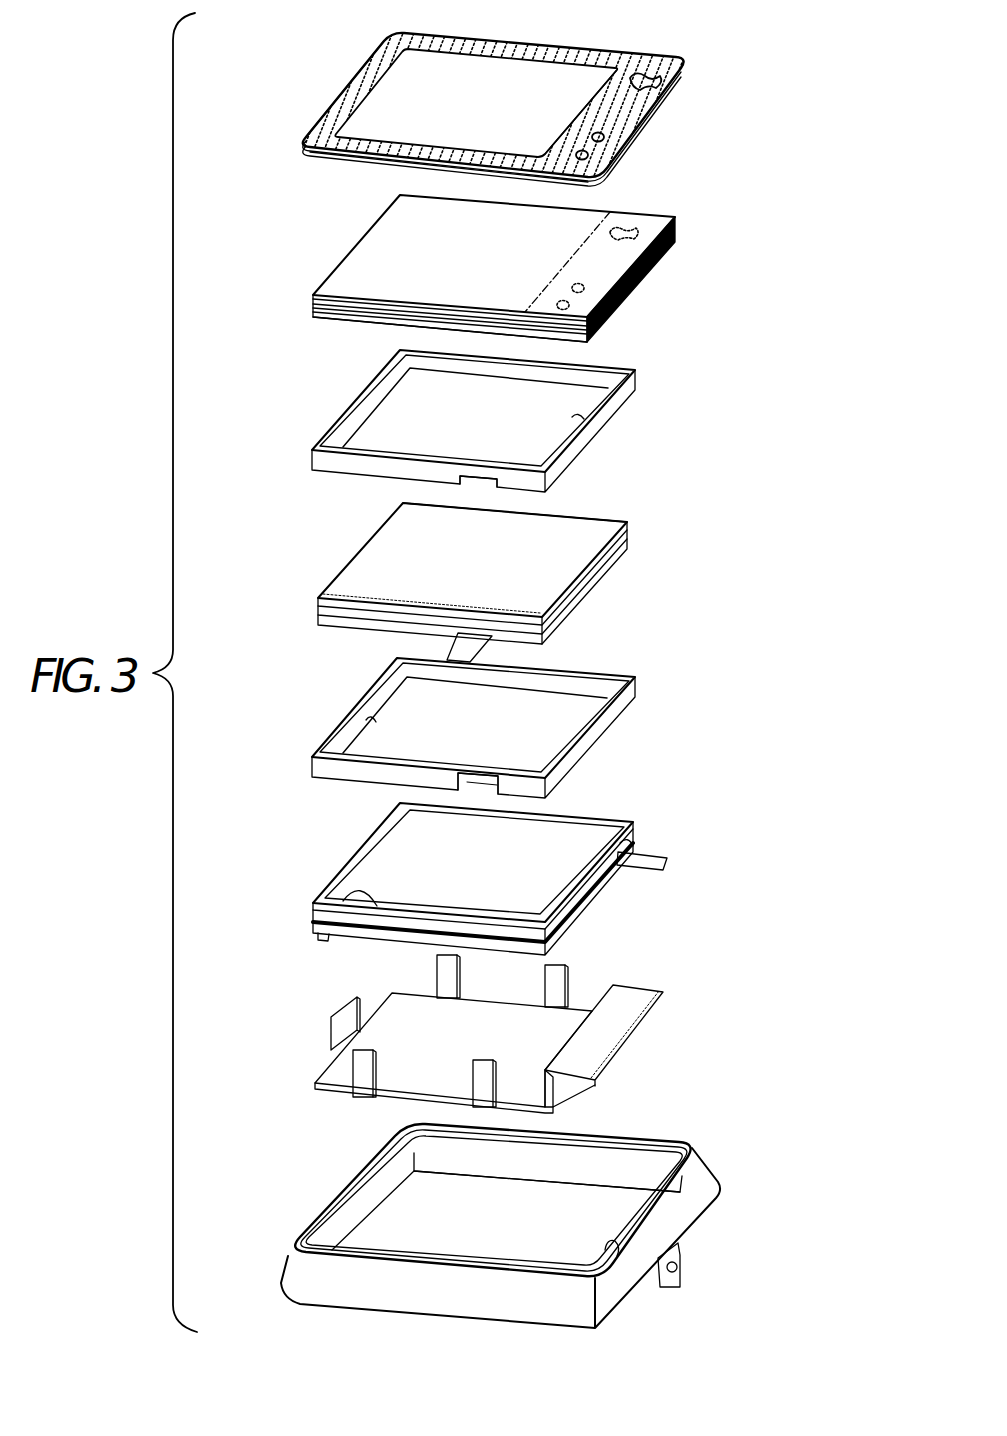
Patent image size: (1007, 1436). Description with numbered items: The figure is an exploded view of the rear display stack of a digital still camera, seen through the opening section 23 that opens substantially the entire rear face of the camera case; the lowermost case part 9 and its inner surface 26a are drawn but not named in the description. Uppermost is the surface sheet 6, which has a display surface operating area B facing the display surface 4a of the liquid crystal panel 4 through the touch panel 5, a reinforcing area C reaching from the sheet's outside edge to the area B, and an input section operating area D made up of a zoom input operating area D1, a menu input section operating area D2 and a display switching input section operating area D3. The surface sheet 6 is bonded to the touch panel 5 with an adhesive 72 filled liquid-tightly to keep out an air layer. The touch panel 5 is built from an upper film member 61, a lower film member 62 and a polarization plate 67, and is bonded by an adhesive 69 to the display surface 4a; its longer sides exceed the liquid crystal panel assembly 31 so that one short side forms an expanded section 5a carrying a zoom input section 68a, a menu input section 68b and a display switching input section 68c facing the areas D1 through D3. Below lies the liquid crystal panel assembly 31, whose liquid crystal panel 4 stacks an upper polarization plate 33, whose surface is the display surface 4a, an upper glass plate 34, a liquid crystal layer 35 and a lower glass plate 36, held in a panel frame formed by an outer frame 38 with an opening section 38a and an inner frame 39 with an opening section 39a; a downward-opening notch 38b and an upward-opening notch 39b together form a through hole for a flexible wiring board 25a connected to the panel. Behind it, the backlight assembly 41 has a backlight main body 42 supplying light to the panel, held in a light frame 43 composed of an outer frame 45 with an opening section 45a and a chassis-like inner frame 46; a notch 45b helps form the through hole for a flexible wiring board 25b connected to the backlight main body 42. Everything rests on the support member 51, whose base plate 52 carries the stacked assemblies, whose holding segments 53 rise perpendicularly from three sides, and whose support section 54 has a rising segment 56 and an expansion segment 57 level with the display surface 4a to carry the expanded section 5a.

The surface sheet 6 is at (653, 50).
The input section operating area D is at (680, 66).
The zoom input operating area D1 is at (665, 78).
The reinforcing area C is at (623, 113).
The menu input section operating area D2 is at (604, 137).
The display switching input section operating area D3 is at (588, 155).
The display surface operating area B is at (370, 127).
The adhesive 72 is at (387, 170).
The touch panel 5 is at (486, 281).
The polarization plate 67 is at (315, 297).
The upper film member 61 is at (312, 304).
The lower film member 62 is at (312, 309).
The adhesive 69 is at (312, 314).
The zoom input section 68a is at (642, 232).
The expanded section 5a is at (597, 252).
The menu input section 68b is at (590, 287).
The display switching input section 68c is at (573, 305).
The outer frame 38 is at (465, 428).
The opening section 38a is at (580, 420).
The notch 38b is at (463, 481).
The liquid crystal panel assembly 31 is at (489, 574).
The upper polarization plate 33 is at (580, 513).
The liquid crystal panel 4 is at (485, 571).
The display surface 4a is at (383, 578).
The upper glass plate 34 is at (627, 530).
The liquid crystal layer 35 is at (602, 573).
The lower glass plate 36 is at (593, 590).
The flexible wiring board 25a is at (462, 652).
The opening section 39a is at (366, 718).
The notch 39b is at (480, 777).
The inner frame 39 is at (472, 728).
The backlight main body 42 is at (423, 840).
The backlight assembly 41 is at (484, 889).
The notch 45b is at (630, 842).
The flexible wiring board 25b is at (665, 860).
The inner frame 46 is at (608, 880).
The outer frame 45 is at (587, 905).
The light frame 43 is at (513, 894).
The opening section 45a is at (321, 937).
The holding segments 53 is at (343, 1018).
The support member 51 is at (489, 1050).
The base plate 52 is at (440, 1065).
The expansion segment 57 is at (633, 1015).
The rising segment 56 is at (560, 1087).
The support section 54 is at (645, 1046).
The inner bottom surface 26a is at (582, 1157).
The lower case 9 is at (525, 1226).
The opening section 23 is at (612, 1248).